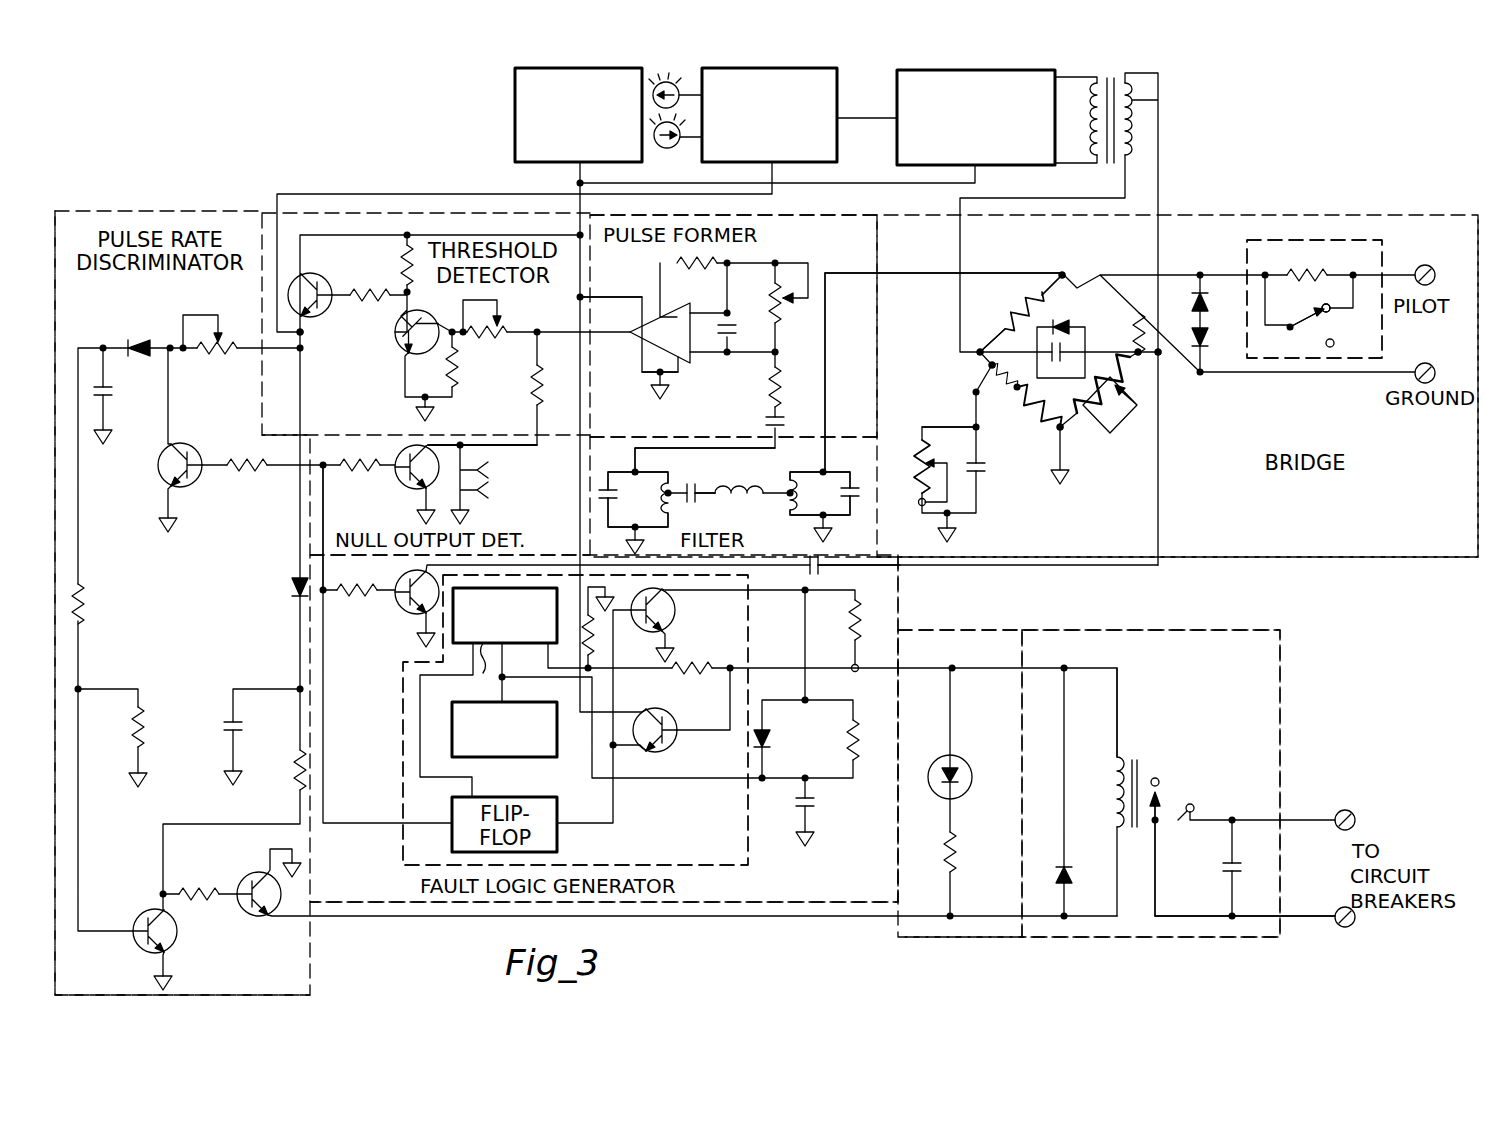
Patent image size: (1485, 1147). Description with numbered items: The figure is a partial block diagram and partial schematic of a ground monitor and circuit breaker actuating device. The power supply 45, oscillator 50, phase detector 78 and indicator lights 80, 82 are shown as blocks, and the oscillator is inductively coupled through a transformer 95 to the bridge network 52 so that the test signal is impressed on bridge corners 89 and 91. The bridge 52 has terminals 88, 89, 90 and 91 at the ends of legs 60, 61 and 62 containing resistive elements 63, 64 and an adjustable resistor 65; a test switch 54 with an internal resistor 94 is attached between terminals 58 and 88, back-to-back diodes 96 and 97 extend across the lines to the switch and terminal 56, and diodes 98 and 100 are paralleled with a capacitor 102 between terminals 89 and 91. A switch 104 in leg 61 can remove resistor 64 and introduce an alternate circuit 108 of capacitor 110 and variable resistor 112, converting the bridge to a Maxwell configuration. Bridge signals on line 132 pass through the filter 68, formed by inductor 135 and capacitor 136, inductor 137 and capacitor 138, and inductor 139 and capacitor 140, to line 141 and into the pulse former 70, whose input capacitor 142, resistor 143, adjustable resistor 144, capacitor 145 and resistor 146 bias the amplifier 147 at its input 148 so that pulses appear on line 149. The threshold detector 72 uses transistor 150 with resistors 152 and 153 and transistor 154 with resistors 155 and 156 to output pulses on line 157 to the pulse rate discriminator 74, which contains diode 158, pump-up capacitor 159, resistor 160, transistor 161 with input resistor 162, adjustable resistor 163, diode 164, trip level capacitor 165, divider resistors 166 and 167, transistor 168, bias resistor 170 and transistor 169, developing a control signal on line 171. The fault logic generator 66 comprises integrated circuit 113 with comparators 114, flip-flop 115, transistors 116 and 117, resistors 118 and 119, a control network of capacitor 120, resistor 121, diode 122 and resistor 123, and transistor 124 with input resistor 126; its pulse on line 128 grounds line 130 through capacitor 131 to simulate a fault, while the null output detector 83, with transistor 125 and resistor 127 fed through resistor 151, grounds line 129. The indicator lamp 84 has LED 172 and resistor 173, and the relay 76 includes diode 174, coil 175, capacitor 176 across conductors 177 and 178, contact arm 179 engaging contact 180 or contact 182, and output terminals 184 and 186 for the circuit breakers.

The DC power supply 45 is at (514, 100).
The phase detector network 78 is at (837, 92).
The low power oscillator 50 is at (896, 149).
The indicator light 80 is at (676, 82).
The indicator light 82 is at (677, 150).
The transformer 95 is at (1158, 100).
The threshold detector network 72 is at (545, 317).
The PNP transistor 154 is at (330, 268).
The resistor 155 is at (400, 258).
The resistor 156 is at (380, 310).
The line 157 is at (303, 334).
The NPN transistor switch 150 is at (404, 344).
The adjustable resistor 152 is at (491, 336).
The resistor 153 is at (452, 372).
The resistor 151 is at (533, 392).
The pulse former network 70 is at (808, 247).
The integrated circuit amplifier 147 is at (660, 333).
The line 149 is at (618, 314).
The resistor 146 is at (692, 268).
The capacitor 145 is at (736, 332).
The adjustable resistor 144 is at (780, 315).
The input 148 is at (686, 362).
The resistor 143 is at (788, 388).
The input capacitor 142 is at (764, 426).
The filter network 68 is at (798, 552).
The line 141 is at (638, 458).
The capacitor 140 is at (613, 493).
The capacitor 138 is at (692, 484).
The inductor 139 is at (692, 507).
The inductor 137 is at (739, 480).
The inductor 135 is at (792, 474).
The capacitor 136 is at (862, 496).
The impedance bridge network 52 is at (1316, 502).
The line 132 is at (897, 272).
The terminal 88 is at (1064, 272).
The impedance leg 60 is at (1040, 288).
The resistive element 63 is at (1020, 313).
The terminal 89 is at (985, 335).
The diode 98 is at (1067, 322).
The capacitor 102 is at (1066, 350).
The terminal 91 is at (1138, 312).
The impedance leg 62 is at (1158, 358).
The switch 104 is at (987, 364).
The impedance leg 61 is at (1004, 380).
The resistive element 64 is at (1044, 420).
The diode 100 is at (1080, 394).
The adjustable resistor 65 is at (1110, 405).
The terminal 90 is at (1063, 432).
The alternate circuit 108 is at (944, 423).
The variable resistor 112 is at (917, 466).
The capacitor 110 is at (984, 468).
The diode 96 is at (1202, 303).
The diode 97 is at (1202, 344).
The internal resistor 94 is at (1308, 273).
The test switch 54 is at (1295, 326).
The terminal 58 is at (1422, 266).
The terminal 56 is at (1422, 372).
The pulse rate discriminator network 74 is at (164, 298).
The diode 164 is at (156, 328).
The adjustable resistor 163 is at (220, 354).
The trip level capacitor 165 is at (112, 394).
The bias resistor 170 is at (174, 416).
The NPN transistor switch 161 is at (210, 437).
The input resistor 162 is at (243, 479).
The resistor 166 is at (88, 607).
The diode 158 is at (292, 590).
The resistor 167 is at (140, 728).
The pump-up capacitor 159 is at (238, 727).
The resistor 160 is at (298, 771).
The NPN transistor switch 168 is at (173, 939).
The NPN transistor switch 169 is at (259, 912).
The line 171 is at (350, 917).
The null output detector 83 is at (557, 512).
The line 128 is at (324, 463).
The resistor 127 is at (347, 527).
The transistor 125 is at (410, 490).
The line 129 is at (510, 445).
The input resistor 126 is at (356, 605).
The NPN transistor 124 is at (410, 613).
The fault logic generator 66 is at (745, 898).
The integrated circuit 113 is at (706, 823).
The comparators 114 is at (500, 702).
The flip-flop 115 is at (526, 790).
The line 130 is at (783, 566).
The capacitor 131 is at (822, 569).
The NPN transistor 116 is at (686, 612).
The resistor 119 is at (590, 642).
The resistor 118 is at (694, 665).
The resistor 123 is at (853, 639).
The PNP transistor 117 is at (678, 728).
The diode 122 is at (772, 751).
The resistor 121 is at (860, 749).
The capacitor 120 is at (815, 804).
The indicator lamp 84 is at (998, 730).
The relay 76 is at (1216, 705).
The light emitting diode 172 is at (972, 777).
The current limiting resistor 173 is at (960, 855).
The diode 174 is at (1072, 879).
The coil 175 is at (1112, 799).
The contact 180 is at (1156, 778).
The contact arm 179 is at (1170, 797).
The contact 182 is at (1184, 861).
The conductor 177 is at (1234, 820).
The capacitor 176 is at (1241, 866).
The conductor 178 is at (1198, 914).
The output terminal 184 is at (1354, 817).
The output terminal 186 is at (1354, 928).